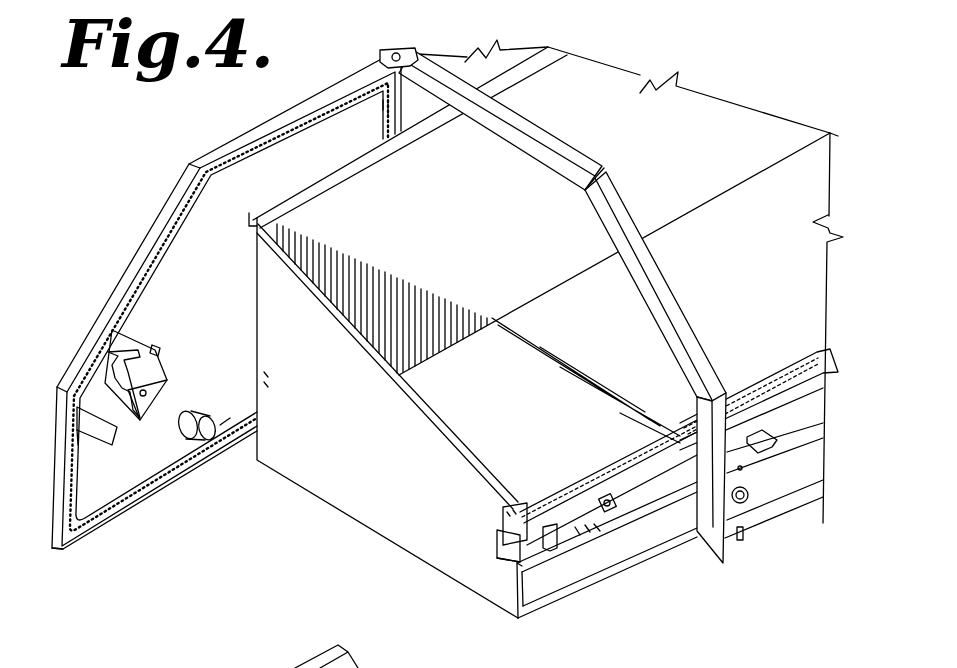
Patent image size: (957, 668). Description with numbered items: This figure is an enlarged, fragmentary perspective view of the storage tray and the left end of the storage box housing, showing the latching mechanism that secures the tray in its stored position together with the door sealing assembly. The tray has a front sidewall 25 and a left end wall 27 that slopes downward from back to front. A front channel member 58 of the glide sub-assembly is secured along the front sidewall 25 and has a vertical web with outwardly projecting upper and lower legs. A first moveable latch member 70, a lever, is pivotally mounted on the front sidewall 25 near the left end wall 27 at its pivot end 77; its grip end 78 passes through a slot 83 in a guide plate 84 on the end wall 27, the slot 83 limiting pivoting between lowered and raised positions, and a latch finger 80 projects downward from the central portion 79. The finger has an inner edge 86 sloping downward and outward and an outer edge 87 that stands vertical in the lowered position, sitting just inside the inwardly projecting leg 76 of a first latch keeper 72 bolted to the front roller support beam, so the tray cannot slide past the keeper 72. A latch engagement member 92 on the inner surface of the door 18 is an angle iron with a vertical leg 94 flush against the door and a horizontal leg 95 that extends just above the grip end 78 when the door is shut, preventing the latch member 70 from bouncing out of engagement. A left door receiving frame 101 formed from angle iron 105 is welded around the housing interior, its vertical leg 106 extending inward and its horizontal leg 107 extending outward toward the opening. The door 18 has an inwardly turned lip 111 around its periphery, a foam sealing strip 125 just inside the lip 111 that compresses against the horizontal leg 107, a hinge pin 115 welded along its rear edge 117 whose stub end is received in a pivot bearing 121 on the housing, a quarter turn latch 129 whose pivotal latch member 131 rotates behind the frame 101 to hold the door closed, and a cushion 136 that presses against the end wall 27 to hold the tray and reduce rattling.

The door 18 is at (213, 315).
The front sidewall 25 is at (805, 418).
The left end wall 27 is at (305, 429).
The front channel member 58 is at (510, 600).
The first moveable latch member 70 is at (564, 506).
The first latch keeper 72 is at (767, 447).
The inwardly projecting leg 76 is at (755, 433).
The pivot end 77 is at (607, 497).
The grip end 78 is at (497, 560).
The central portion 79 is at (563, 540).
The latch finger 80 is at (587, 529).
The slot 83 is at (500, 507).
The guide plate 84 is at (493, 523).
The inner edge 86 is at (597, 529).
The outer edge 87 is at (577, 531).
The latch engagement member 92 is at (80, 437).
The vertical leg 94 is at (77, 440).
The horizontal leg 95 is at (107, 413).
The left door receiving frame 101 is at (586, 329).
The angle iron 105 is at (550, 165).
The vertical leg 106 is at (525, 127).
The horizontal leg 107 is at (498, 133).
The inwardly turned lip 111 is at (73, 548).
The hinge pin 115 is at (383, 108).
The rear edge 117 is at (373, 102).
The pivot bearing 121 is at (380, 55).
The foam sealing strip 125 is at (170, 241).
The quarter turn latch 129 is at (130, 402).
The pivotal latch member 131 is at (110, 367).
The cushion 136 is at (225, 420).